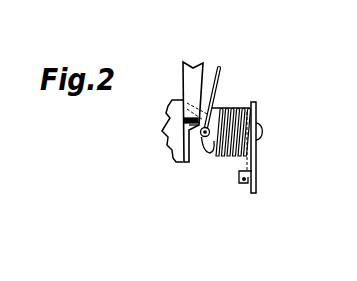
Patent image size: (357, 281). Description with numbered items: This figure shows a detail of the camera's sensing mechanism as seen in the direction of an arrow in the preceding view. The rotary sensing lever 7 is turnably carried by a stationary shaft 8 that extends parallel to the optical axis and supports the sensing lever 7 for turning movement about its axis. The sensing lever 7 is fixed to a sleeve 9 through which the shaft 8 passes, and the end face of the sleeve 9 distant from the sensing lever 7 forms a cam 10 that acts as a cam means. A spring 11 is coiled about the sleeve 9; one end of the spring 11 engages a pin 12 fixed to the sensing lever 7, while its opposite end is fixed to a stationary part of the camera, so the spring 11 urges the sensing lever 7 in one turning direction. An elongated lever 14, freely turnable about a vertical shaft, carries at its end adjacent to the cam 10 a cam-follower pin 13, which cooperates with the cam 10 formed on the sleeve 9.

The sensing lever 7 is at (258, 162).
The stationary shaft 8 is at (200, 132).
The sleeve 9 is at (227, 150).
The cam 10 is at (172, 100).
The spring 11 is at (257, 107).
The pin 12 is at (242, 184).
The cam-follower pin 13 is at (207, 152).
The elongated lever 14 is at (197, 63).